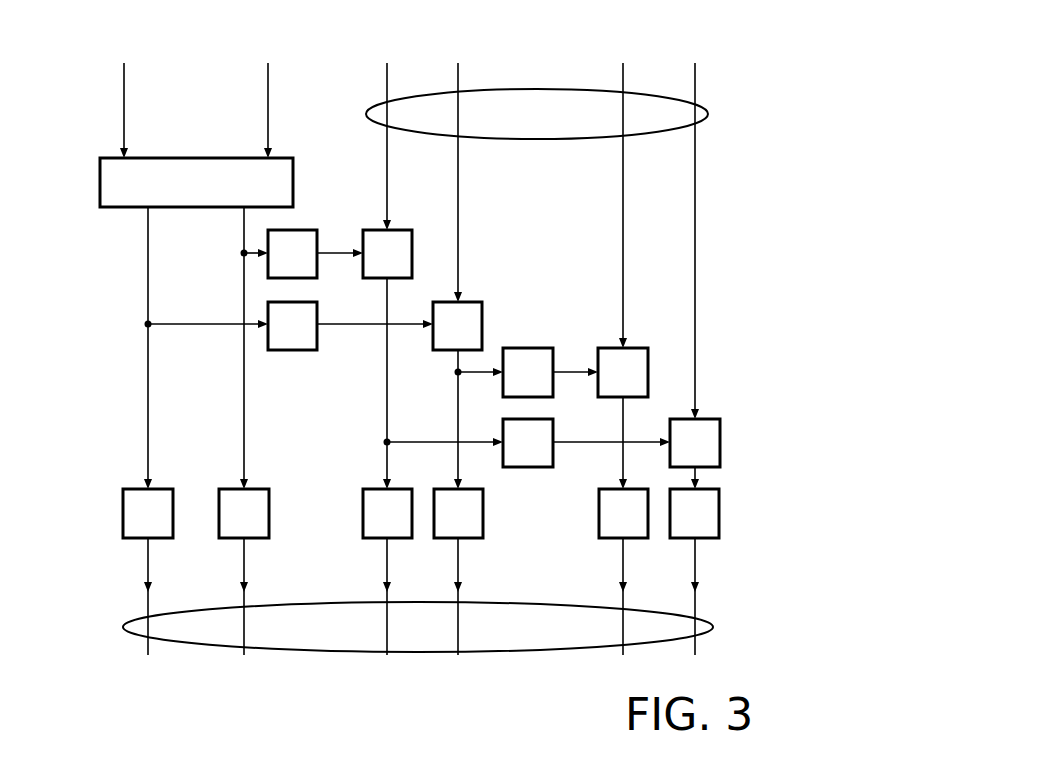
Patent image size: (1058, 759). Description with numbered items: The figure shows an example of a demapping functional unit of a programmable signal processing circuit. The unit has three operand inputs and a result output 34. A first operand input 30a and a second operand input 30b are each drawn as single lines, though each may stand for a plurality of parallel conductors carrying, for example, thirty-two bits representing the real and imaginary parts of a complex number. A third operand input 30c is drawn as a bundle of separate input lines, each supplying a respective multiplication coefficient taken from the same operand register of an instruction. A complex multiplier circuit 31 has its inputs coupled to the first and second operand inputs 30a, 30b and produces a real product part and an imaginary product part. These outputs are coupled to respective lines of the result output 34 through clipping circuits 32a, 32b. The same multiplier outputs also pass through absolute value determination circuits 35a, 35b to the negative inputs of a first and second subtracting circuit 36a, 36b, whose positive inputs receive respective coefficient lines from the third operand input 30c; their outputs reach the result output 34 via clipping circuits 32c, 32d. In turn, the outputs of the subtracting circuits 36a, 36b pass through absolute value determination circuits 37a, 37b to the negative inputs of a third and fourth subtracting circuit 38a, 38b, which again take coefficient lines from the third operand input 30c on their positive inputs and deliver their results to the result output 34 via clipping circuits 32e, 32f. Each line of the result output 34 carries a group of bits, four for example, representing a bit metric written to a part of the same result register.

The first operand input 30a is at (124, 80).
The second operand input 30b is at (268, 80).
The third operand input 30c is at (543, 88).
The complex multiplier circuit 31 is at (100, 183).
The clipping circuit 32a is at (123, 507).
The clipping circuit 32b is at (269, 525).
The clipping circuit 32c is at (363, 507).
The clipping circuit 32d is at (483, 528).
The clipping circuit 32e is at (603, 548).
The clipping circuit 32f is at (720, 520).
The result output 34 is at (527, 652).
The absolute value determination circuit 35a is at (305, 230).
The absolute value determination circuit 35b is at (293, 350).
The first subtracting circuit 36a is at (403, 230).
The second subtracting circuit 36b is at (478, 302).
The absolute value determination circuit 37a is at (533, 348).
The absolute value determination circuit 37b is at (537, 467).
The third subtracting circuit 38a is at (637, 348).
The fourth subtracting circuit 38b is at (708, 419).